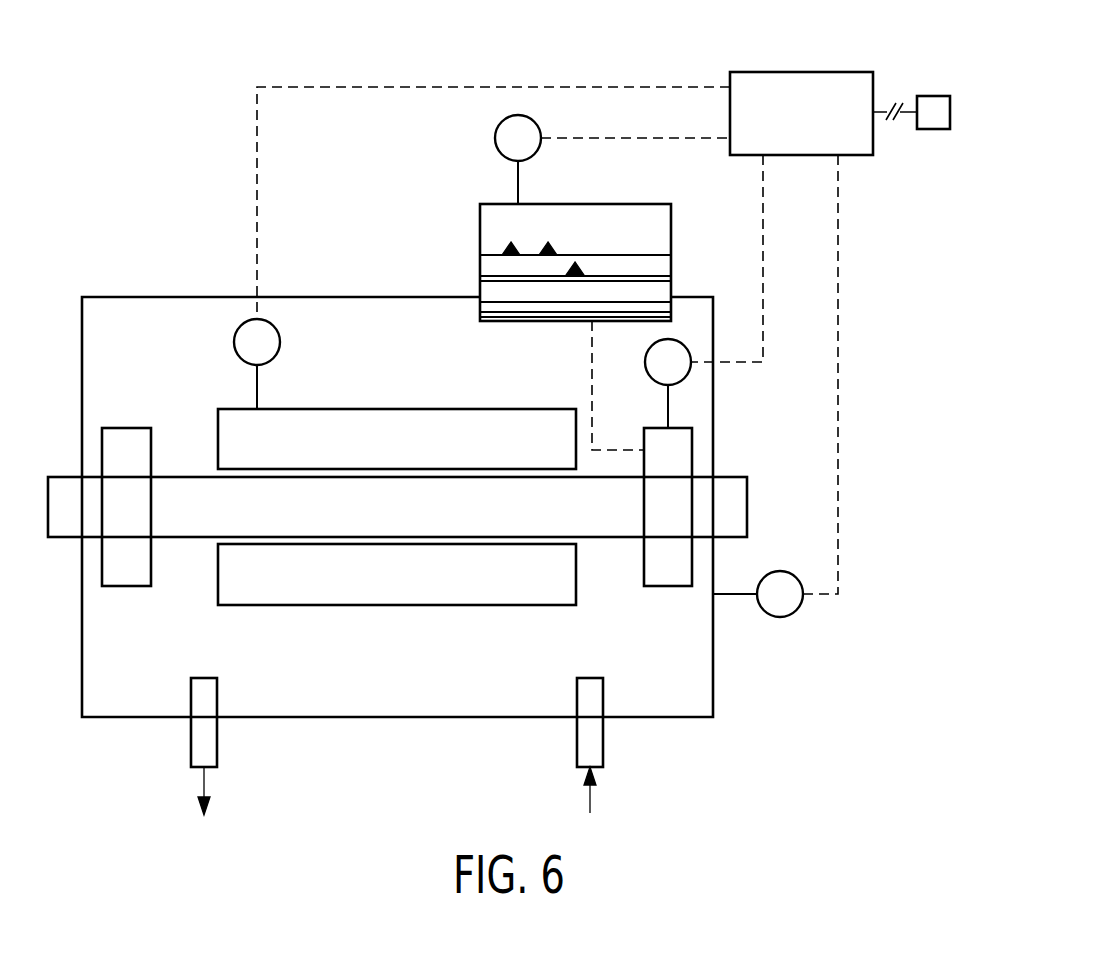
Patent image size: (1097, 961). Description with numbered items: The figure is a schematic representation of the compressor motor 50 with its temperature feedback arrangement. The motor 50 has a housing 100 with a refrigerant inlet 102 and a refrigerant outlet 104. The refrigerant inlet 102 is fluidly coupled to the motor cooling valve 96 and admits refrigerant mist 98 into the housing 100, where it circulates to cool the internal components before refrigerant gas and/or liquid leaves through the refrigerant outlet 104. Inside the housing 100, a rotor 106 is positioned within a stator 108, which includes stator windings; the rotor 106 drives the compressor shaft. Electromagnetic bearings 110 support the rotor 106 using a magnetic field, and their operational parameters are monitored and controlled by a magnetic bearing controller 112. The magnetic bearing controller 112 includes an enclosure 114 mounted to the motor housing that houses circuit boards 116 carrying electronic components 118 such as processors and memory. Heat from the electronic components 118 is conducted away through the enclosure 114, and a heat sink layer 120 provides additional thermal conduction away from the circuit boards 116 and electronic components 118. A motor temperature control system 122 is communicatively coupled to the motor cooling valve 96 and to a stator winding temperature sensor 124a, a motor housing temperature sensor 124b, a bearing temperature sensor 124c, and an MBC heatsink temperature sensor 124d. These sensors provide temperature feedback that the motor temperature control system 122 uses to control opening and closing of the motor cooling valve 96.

The motor 50 is at (245, 49).
The motor cooling valve 96 is at (930, 96).
The refrigerant mist 98 is at (590, 795).
The housing 100 is at (713, 678).
The refrigerant inlet 102 is at (603, 735).
The refrigerant outlet 104 is at (217, 735).
The rotor 106 is at (186, 477).
The stator 108 is at (400, 409).
The electromagnetic bearings 110 is at (692, 456).
The magnetic bearing controller 112 is at (650, 193).
The enclosure 114 is at (480, 232).
The circuit boards 116 is at (638, 248).
The electronic components 118 is at (545, 253).
The heat sink layer 120 is at (536, 308).
The motor temperature control system 122 is at (800, 72).
The stator winding temperature sensor 124a is at (278, 335).
The motor housing temperature sensor 124b is at (797, 611).
The bearing temperature sensor 124c is at (682, 344).
The MBC heatsink temperature sensor 124d is at (500, 128).